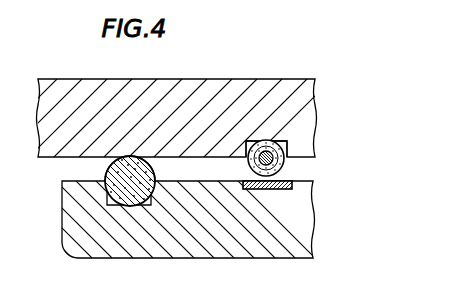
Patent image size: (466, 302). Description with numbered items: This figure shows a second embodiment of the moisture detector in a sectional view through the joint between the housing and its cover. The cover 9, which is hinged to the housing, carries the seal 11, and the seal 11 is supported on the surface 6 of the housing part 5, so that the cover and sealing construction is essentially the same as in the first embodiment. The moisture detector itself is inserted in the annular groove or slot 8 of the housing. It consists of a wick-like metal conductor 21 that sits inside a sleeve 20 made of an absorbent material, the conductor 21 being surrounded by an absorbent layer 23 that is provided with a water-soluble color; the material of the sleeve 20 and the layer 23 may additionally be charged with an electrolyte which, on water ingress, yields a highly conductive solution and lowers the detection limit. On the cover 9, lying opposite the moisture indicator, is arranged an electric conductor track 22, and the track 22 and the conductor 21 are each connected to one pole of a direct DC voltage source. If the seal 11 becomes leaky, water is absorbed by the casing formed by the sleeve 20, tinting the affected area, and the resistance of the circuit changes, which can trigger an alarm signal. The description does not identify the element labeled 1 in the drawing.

The upper plate member 1 is at (38, 104).
The housing part 5 is at (60, 159).
The surface 6 is at (131, 156).
The annular groove 8 is at (256, 141).
The cover 9 is at (80, 228).
The seal 11 is at (106, 184).
The sleeve 20 is at (264, 141).
The wick-like metal conductor 21 is at (269, 151).
The electric conductor track 22 is at (253, 189).
The absorbent layer 23 is at (277, 141).